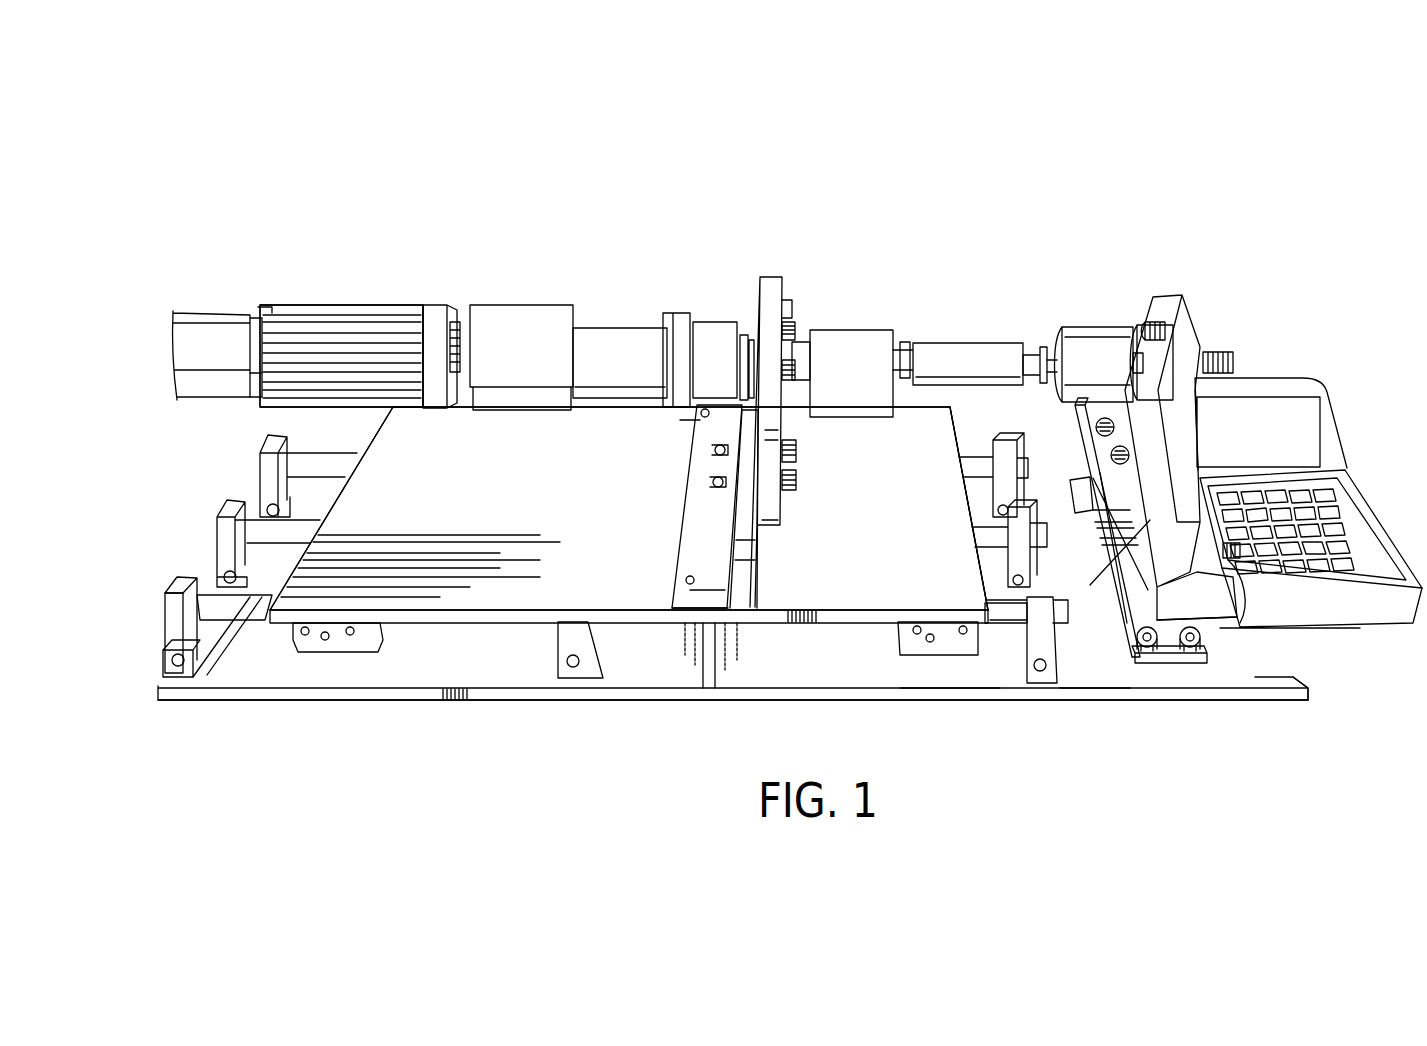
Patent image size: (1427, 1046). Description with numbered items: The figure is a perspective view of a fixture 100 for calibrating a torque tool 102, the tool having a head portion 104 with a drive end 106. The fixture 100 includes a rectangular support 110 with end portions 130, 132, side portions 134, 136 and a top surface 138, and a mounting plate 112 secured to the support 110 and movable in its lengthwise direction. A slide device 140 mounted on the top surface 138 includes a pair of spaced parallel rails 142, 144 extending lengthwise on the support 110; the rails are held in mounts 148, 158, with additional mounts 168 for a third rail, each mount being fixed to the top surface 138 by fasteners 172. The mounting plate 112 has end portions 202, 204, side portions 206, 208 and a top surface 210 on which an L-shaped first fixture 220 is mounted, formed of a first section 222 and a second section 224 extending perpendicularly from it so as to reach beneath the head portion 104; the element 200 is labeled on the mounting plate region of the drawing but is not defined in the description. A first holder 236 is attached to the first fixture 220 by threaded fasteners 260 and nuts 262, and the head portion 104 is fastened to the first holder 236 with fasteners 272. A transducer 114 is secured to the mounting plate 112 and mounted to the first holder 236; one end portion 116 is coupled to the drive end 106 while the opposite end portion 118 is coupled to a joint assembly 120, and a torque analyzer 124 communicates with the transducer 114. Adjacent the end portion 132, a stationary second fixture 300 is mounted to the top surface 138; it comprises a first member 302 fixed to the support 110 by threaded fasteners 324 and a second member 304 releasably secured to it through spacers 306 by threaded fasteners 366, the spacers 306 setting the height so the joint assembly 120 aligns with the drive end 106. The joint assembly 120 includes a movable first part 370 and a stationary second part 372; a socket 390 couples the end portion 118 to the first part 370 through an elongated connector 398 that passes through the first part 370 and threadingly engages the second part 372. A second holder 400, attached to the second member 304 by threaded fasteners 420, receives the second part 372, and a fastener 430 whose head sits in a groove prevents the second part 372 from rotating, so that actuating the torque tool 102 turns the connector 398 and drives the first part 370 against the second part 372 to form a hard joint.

The fixture 100 is at (931, 150).
The torque tool 102 is at (518, 240).
The head portion 104 is at (740, 340).
The drive end 106 is at (788, 345).
The support 110 is at (717, 722).
The mounting plate 112 is at (482, 655).
The transducer 114 is at (850, 410).
The end portion 116 is at (803, 367).
The opposite end portion 118 is at (905, 345).
The joint assembly 120 is at (1102, 255).
The torque analyzer 124 is at (1380, 335).
The end portion 130 is at (212, 686).
The end portion 132 is at (1297, 700).
The side portion 134 is at (620, 703).
The side portion 136 is at (1040, 472).
The top surface 138 is at (1108, 701).
The slide device 140 is at (275, 655).
The rail 142 is at (250, 612).
The rail 144 is at (330, 460).
The mount 148 is at (175, 622).
The mount 158 is at (268, 470).
The mount 168 is at (225, 537).
The fasteners 172 is at (225, 577).
The table 200 is at (417, 626).
The end portion 202 is at (350, 500).
The end portion 204 is at (965, 495).
The side portion 206 is at (865, 608).
The side portion 208 is at (915, 410).
The top surface 210 is at (557, 478).
The first fixture 220 is at (617, 492).
The first section 222 is at (688, 522).
The second section 224 is at (745, 560).
The first holder 236 is at (773, 250).
The threaded fasteners 260 is at (800, 488).
The nuts 262 is at (710, 447).
The fasteners 272 is at (786, 298).
The second fixture 300 is at (1186, 672).
The first member 302 is at (1107, 632).
The second member 304 is at (1197, 480).
The spacer 306 is at (1228, 620).
The threaded fasteners 324 is at (1150, 650).
The threaded fasteners 366 is at (1230, 583).
The first part 370 is at (1085, 340).
The second part 372 is at (1162, 360).
The socket 390 is at (970, 350).
The elongated connector 398 is at (1043, 350).
The second holder 400 is at (1175, 285).
The threaded fasteners 420 is at (1100, 340).
The fastener 430 is at (1153, 322).